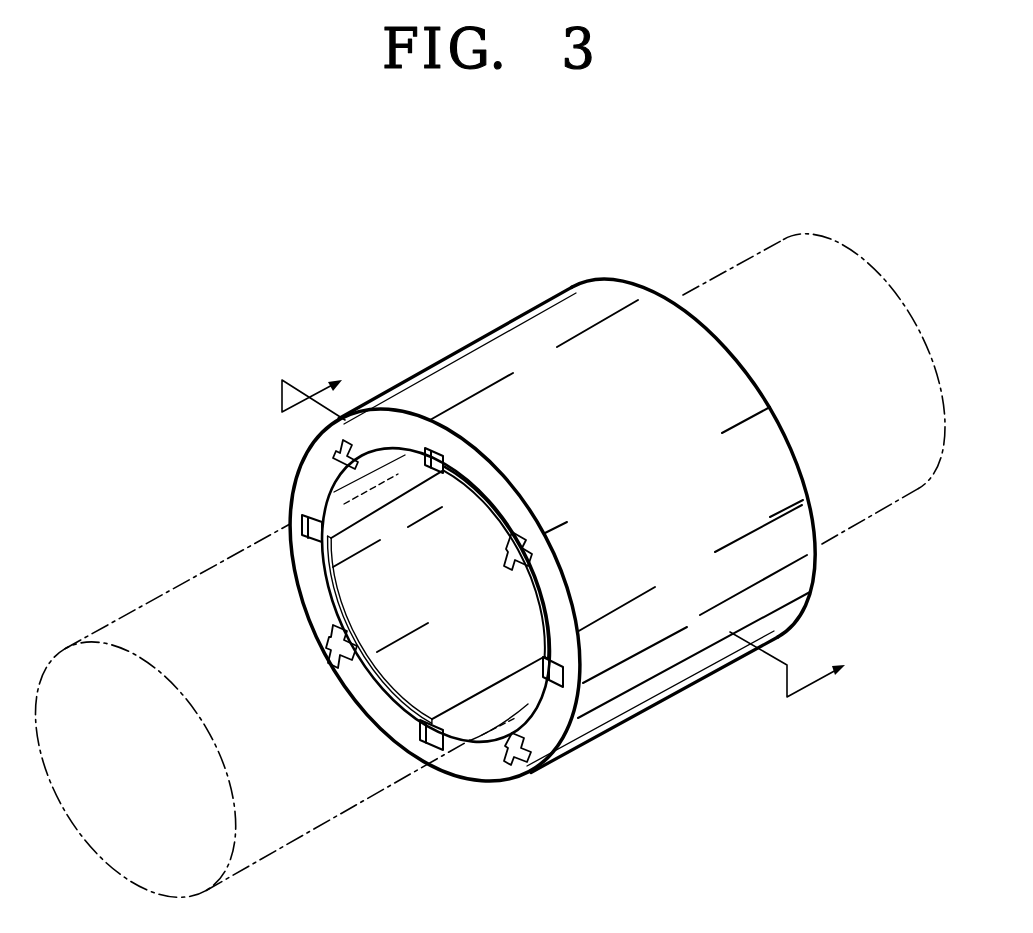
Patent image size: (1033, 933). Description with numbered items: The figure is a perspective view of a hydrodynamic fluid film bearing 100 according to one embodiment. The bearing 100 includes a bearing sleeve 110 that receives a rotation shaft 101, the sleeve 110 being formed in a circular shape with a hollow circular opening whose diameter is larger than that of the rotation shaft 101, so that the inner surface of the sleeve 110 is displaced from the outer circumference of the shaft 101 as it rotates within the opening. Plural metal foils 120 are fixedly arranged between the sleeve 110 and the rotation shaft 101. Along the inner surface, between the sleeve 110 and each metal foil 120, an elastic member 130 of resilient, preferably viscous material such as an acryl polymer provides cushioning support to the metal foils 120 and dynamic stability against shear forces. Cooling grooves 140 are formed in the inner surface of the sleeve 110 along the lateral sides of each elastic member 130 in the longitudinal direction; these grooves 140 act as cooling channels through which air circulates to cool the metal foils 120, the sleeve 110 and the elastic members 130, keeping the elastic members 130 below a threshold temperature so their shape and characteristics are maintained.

The hydrodynamic fluid film bearing 100 is at (402, 272).
The rotation shaft 101 is at (150, 598).
The bearing sleeve 110 is at (463, 762).
The metal foil 120 is at (403, 652).
The elastic member 130 is at (515, 762).
The cooling groove 140 is at (336, 634).